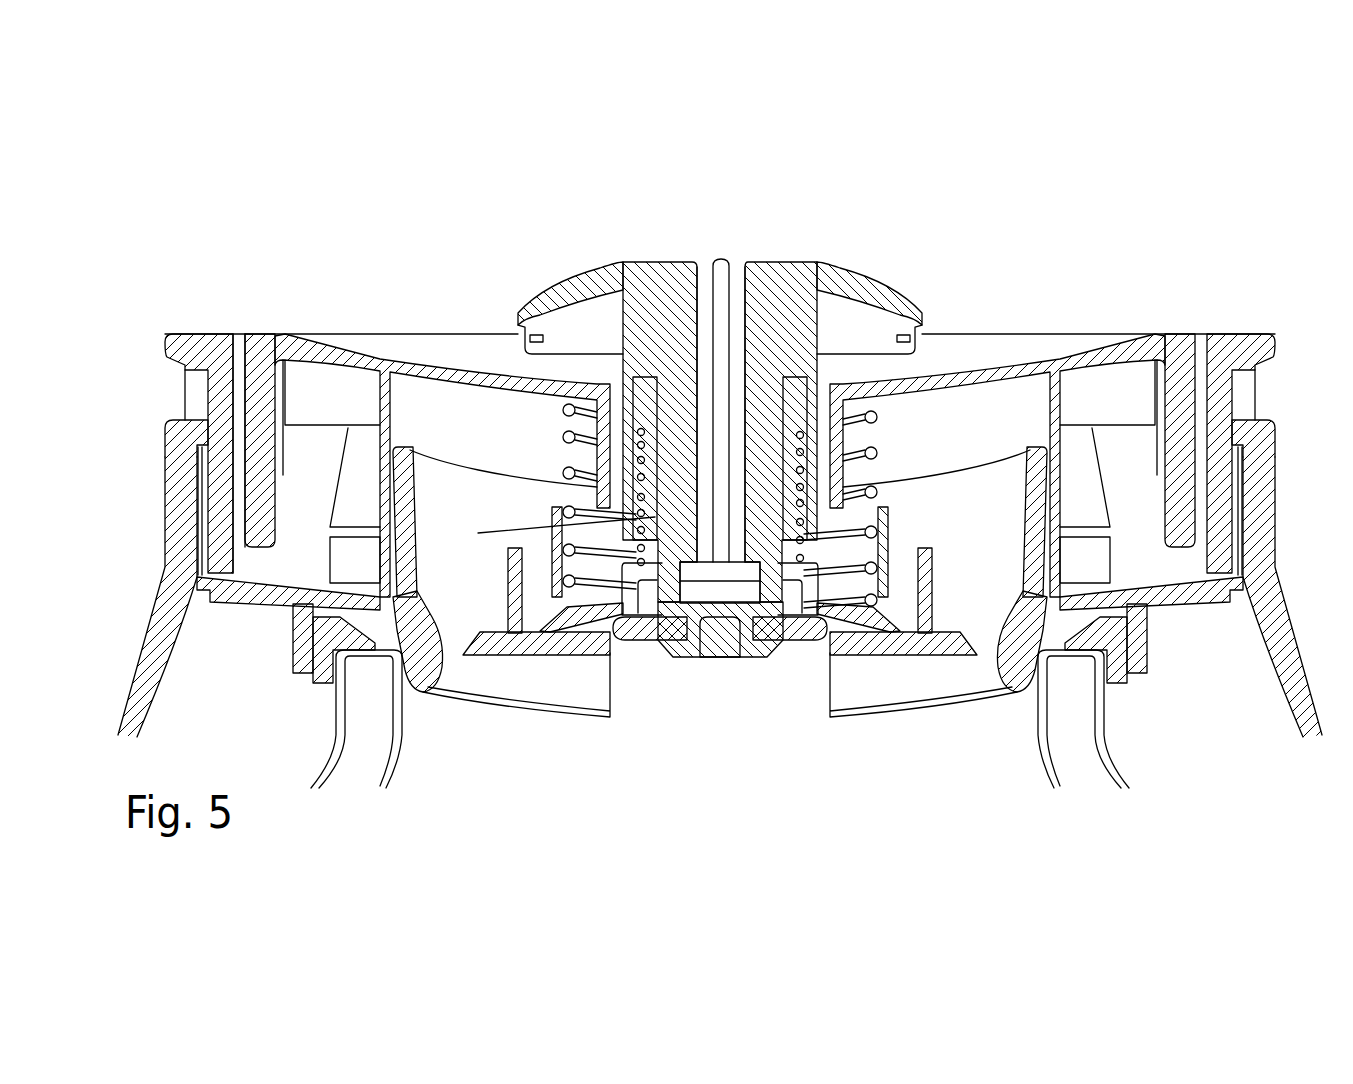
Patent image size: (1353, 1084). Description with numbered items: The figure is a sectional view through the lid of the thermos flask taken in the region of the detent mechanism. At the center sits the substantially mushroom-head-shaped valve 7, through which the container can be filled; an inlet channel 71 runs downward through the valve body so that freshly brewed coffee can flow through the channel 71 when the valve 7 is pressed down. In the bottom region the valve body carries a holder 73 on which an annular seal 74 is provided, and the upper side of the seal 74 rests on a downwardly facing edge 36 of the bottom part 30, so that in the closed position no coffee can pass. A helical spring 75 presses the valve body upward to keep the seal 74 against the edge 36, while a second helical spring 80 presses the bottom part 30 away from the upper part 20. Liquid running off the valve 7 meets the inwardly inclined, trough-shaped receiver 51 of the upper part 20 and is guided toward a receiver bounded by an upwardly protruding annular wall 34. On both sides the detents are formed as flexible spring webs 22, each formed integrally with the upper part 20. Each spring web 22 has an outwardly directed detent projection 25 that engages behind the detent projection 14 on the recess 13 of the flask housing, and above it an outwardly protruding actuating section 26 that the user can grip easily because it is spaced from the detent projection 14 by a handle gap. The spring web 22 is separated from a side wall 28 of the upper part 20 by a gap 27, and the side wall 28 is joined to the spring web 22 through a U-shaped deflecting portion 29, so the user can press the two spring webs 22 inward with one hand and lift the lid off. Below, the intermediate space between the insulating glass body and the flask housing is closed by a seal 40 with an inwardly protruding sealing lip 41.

The valve 7 is at (905, 293).
The recess 13 is at (192, 488).
The detent projection 14 is at (200, 433).
The upper part 20 is at (1087, 347).
The spring web 22 is at (195, 343).
The detent projection 25 is at (200, 457).
The actuating section 26 is at (180, 342).
The gap 27 is at (242, 392).
The side wall 28 is at (260, 397).
The U-shaped deflecting portion 29 is at (243, 553).
The bottom part 30 is at (948, 640).
The annular wall 34 is at (880, 633).
The edge 36 is at (841, 623).
The seal 40 is at (360, 630).
The sealing lip 41 is at (393, 645).
The trough-shaped receiver 51 is at (1000, 363).
The inlet channel 71 is at (735, 278).
The holder 73 is at (693, 643).
The annular seal 74 is at (643, 628).
The spring 75 is at (812, 447).
The second spring 80 is at (873, 448).